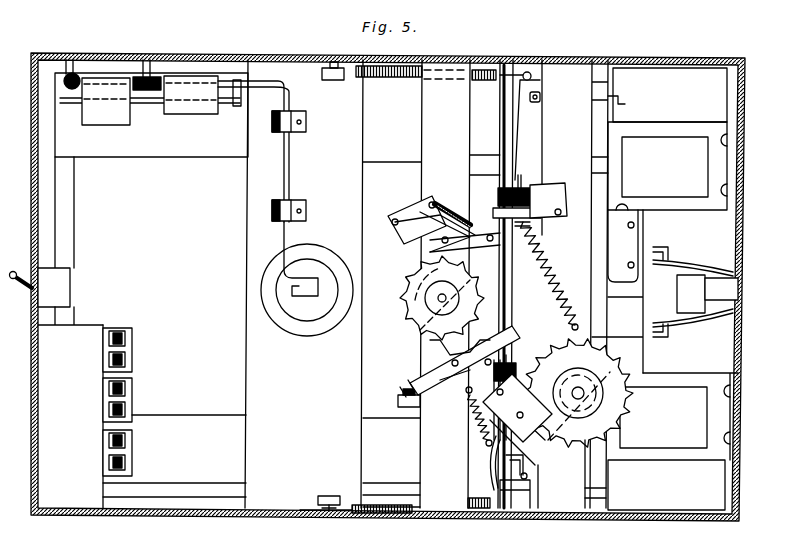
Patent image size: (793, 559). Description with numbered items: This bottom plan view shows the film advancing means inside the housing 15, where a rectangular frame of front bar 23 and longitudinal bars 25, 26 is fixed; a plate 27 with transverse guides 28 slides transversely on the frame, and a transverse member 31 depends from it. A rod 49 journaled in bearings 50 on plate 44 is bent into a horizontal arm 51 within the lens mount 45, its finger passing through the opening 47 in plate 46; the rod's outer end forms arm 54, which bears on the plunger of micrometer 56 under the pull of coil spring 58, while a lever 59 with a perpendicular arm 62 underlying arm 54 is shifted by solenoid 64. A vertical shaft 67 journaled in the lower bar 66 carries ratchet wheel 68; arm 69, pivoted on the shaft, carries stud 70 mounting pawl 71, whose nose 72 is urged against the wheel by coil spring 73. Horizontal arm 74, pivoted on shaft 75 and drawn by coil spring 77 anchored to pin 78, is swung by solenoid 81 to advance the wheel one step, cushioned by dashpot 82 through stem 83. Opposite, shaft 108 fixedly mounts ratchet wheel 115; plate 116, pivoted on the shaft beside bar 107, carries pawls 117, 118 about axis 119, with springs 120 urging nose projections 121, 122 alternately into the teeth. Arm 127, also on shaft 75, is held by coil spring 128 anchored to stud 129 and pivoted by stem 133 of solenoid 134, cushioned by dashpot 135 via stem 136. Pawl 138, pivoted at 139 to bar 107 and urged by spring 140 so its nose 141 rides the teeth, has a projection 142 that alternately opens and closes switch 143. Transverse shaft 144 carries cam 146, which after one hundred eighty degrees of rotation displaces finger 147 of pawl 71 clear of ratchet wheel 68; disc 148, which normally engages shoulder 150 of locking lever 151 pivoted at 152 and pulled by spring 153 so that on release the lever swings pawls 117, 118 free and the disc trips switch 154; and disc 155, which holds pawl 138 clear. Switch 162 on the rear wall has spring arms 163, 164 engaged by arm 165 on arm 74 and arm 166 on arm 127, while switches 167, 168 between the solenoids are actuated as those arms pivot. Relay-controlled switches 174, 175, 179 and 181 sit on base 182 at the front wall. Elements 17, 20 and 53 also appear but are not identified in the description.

The housing 15 is at (212, 516).
The base 17 is at (354, 552).
The switch box 20 is at (62, 280).
The front bar 23 is at (56, 197).
The longitudinal bar 25 is at (216, 70).
The longitudinal bar 26 is at (210, 490).
The plate 27 is at (183, 406).
The transverse guides 28 is at (68, 228).
The transverse member 31 is at (508, 334).
The plate 44 is at (250, 378).
The lens mount 45 is at (277, 322).
The plate 46 is at (298, 318).
The opening 47 is at (318, 320).
The rod 49 is at (283, 168).
The bearings 50 is at (290, 128).
The horizontal arm 51 is at (305, 275).
The clamp 53 is at (149, 70).
The arm 54 is at (280, 88).
The micrometer 56 is at (176, 112).
The coil spring 58 is at (68, 66).
The lever 59 is at (138, 114).
The perpendicular arm 62 is at (237, 106).
The solenoid 64 is at (100, 120).
The lower bar 66 is at (567, 78).
The vertical shaft 67 is at (582, 390).
The ratchet wheel 68 is at (638, 398).
The arm 69 is at (548, 452).
The stud 70 is at (561, 474).
The pawl 71 is at (478, 435).
The nose 72 is at (545, 466).
The coil spring 73 is at (484, 453).
The arm 74 is at (540, 520).
The shaft 75 is at (572, 294).
The coil spring 77 is at (402, 520).
The pin 78 is at (330, 496).
The solenoid 81 is at (686, 433).
The dashpot 82 is at (686, 497).
The stem 83 is at (606, 498).
The bar 107 is at (428, 448).
The shaft 108 is at (440, 298).
The ratchet wheel 115 is at (406, 286).
The plate 116 is at (402, 212).
The pawl 117 is at (433, 227).
The pawl 118 is at (420, 240).
The axis 119 is at (465, 242).
The springs 120 is at (458, 214).
The nose projection 121 is at (442, 298).
The nose projection 122 is at (430, 256).
The arm 127 is at (540, 133).
The coil spring 128 is at (383, 74).
The stud 129 is at (326, 80).
The stem 133 is at (600, 158).
The solenoid 134 is at (692, 187).
The dashpot 135 is at (696, 102).
The stem 136 is at (618, 105).
The pawl 138 is at (464, 412).
The pivot 139 is at (464, 413).
The spring 140 is at (451, 426).
The nose 141 is at (432, 350).
The projection 142 is at (430, 382).
The switch 143 is at (398, 405).
The shaft 144 is at (503, 296).
The cam 146 is at (496, 520).
The finger 147 is at (488, 472).
The disc 148 is at (521, 193).
The shoulder 150 is at (552, 212).
The locking lever 151 is at (540, 226).
The pivot 152 is at (560, 213).
The spring 153 is at (560, 258).
The switch 154 is at (488, 160).
The disc 155 is at (520, 373).
The switch 162 is at (730, 292).
The spring arm 163 is at (700, 322).
The spring arm 164 is at (706, 264).
The arm 165 is at (658, 334).
The arm 166 is at (658, 258).
The switch 167 is at (636, 326).
The switch 168 is at (638, 224).
The switch 174 is at (132, 336).
The switch 175 is at (132, 357).
The double pole single throw switch 179 is at (132, 392).
The double pole single throw switch 181 is at (132, 447).
The base 182 is at (87, 338).